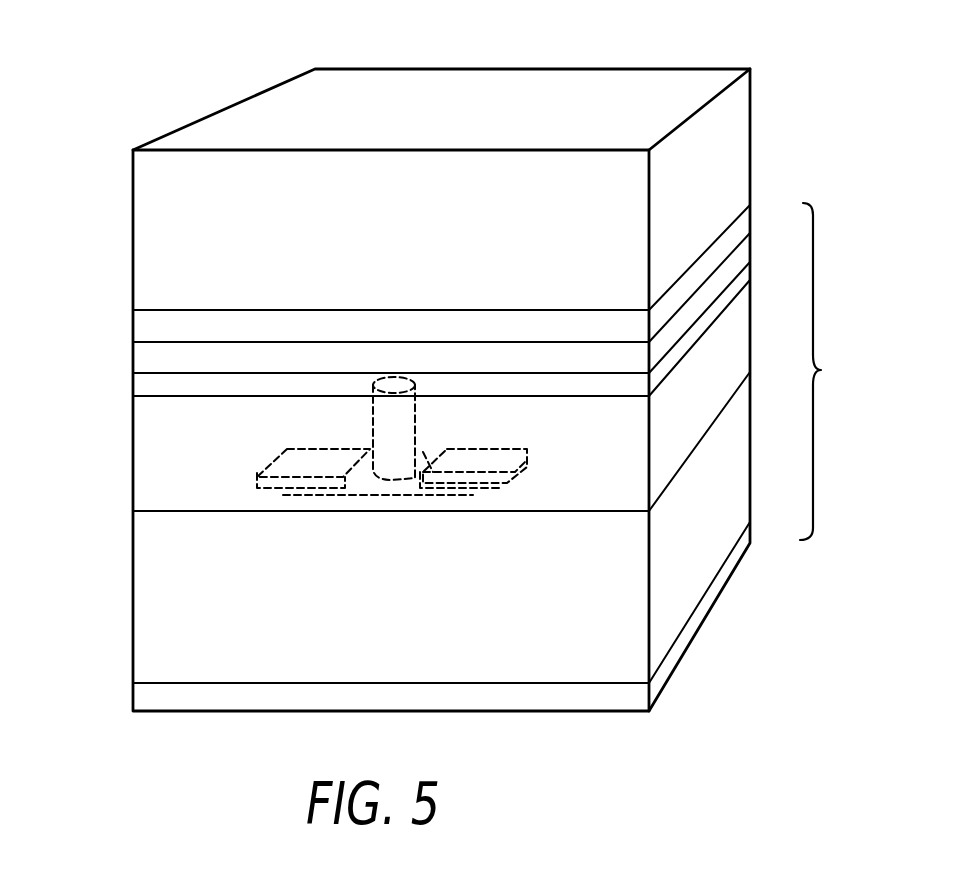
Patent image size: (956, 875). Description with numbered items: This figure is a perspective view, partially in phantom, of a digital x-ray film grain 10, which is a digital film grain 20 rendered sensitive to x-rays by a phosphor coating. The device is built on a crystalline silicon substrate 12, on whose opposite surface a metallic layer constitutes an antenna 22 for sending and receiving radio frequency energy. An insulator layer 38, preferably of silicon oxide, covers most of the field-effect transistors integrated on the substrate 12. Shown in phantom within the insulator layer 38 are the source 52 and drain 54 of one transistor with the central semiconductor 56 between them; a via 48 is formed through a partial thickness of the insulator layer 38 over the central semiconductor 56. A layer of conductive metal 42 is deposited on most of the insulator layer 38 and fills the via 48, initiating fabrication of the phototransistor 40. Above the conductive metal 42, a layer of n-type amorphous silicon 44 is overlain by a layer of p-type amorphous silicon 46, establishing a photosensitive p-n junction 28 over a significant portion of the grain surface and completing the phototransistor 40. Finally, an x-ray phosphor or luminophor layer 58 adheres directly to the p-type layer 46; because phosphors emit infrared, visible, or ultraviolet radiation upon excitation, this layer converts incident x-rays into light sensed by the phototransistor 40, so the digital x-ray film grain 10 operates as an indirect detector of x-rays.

The digital x-ray film grain 10 is at (160, 100).
The crystalline silicon substrate 12 is at (147, 593).
The digital film grain 20 is at (830, 371).
The antenna 22 is at (143, 698).
The photosensitive p-n junction 28 is at (133, 343).
The insulator layer 38 is at (630, 472).
The phototransistor 40 is at (425, 450).
The layer of conductive metal 42 is at (140, 389).
The layer of n-type amorphous silicon 44 is at (136, 363).
The layer of p-type amorphous silicon 46 is at (143, 326).
The via 48 is at (380, 418).
The source 52 is at (505, 482).
The drain 54 is at (285, 462).
The central semiconductor 56 is at (277, 495).
The x-ray phosphor or luminophor layer 58 is at (147, 236).